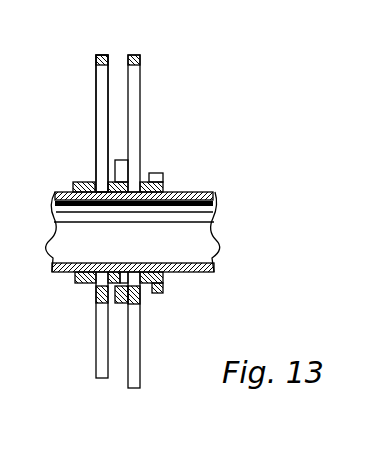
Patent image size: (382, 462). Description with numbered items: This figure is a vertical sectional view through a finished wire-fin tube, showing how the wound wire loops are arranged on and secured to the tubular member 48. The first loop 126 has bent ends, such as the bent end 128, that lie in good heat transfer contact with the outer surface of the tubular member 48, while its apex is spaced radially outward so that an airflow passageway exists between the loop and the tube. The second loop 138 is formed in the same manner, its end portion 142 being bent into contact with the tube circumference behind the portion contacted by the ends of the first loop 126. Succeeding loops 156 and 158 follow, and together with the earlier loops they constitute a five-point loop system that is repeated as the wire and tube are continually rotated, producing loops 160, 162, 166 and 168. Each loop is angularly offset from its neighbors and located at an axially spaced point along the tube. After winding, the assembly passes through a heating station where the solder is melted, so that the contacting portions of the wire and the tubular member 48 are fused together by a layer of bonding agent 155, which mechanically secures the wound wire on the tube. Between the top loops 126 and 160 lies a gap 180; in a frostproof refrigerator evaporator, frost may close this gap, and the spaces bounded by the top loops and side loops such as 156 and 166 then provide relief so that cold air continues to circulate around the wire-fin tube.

The tubular member 48 is at (202, 243).
The layer of bonding agent 155 is at (200, 192).
The end portion 142 is at (112, 179).
The loop 156 is at (125, 163).
The loop 166 is at (207, 146).
The first loop 126 is at (99, 54).
The gap 180 is at (117, 93).
The loop 160 is at (197, 42).
The bent end 128 is at (88, 284).
The loop 168 is at (212, 333).
The loop 158 is at (115, 303).
The second loop 138 is at (100, 378).
The loop 162 is at (135, 388).